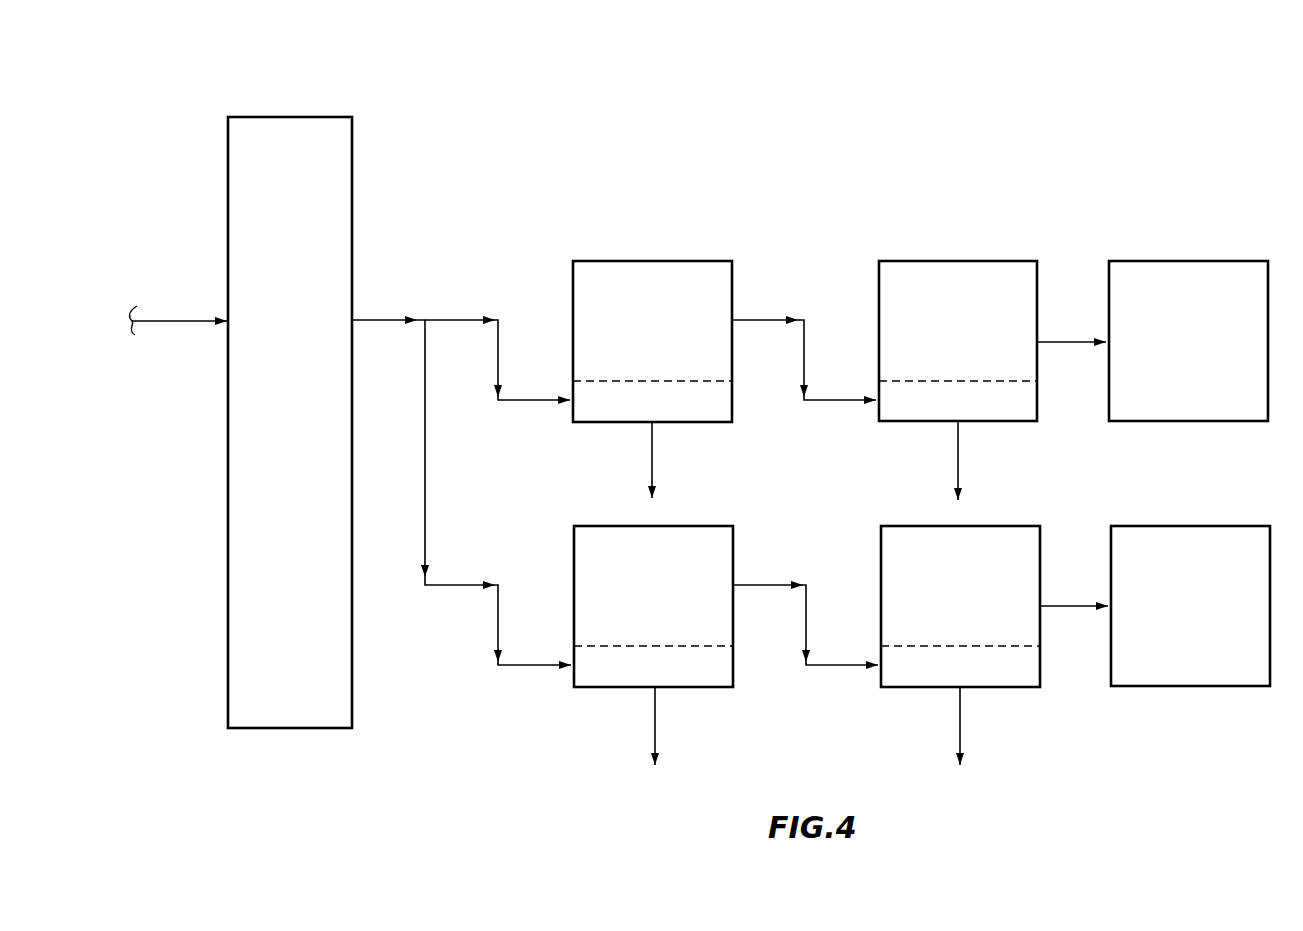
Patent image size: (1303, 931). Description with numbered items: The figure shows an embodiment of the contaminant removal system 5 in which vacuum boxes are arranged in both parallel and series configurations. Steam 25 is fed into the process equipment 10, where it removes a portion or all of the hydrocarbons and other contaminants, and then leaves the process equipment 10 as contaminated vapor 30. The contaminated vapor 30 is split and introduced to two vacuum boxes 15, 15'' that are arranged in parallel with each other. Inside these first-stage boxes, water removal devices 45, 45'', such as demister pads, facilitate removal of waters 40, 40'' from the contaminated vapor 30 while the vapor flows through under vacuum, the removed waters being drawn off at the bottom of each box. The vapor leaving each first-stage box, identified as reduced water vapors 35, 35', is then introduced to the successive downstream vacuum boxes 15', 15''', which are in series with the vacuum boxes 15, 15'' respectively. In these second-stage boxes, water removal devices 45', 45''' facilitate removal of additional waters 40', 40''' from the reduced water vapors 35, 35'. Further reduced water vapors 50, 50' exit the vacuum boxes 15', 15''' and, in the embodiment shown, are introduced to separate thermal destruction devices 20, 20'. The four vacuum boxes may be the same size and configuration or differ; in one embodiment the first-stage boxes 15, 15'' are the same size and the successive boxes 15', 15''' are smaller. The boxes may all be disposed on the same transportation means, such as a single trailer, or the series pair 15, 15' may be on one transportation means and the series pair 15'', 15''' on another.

The contaminant removal system 5 is at (1000, 100).
The process equipment 10 is at (352, 160).
The vacuum box 15 is at (652, 312).
The vacuum box 15' is at (958, 312).
The vacuum box 15'' is at (675, 580).
The vacuum box 15''' is at (988, 581).
The thermal destruction device 20 is at (1191, 312).
The thermal destruction device 20' is at (1198, 576).
The steam 25 is at (172, 322).
The contaminated vapor 30 is at (352, 298).
The reduced water vapor 35 is at (804, 337).
The reduced water vapor 35' is at (805, 598).
The water 40 is at (598, 460).
The water 40' is at (922, 460).
The water 40'' is at (707, 726).
The water 40''' is at (1020, 726).
The water removal device 45 is at (652, 343).
The water removal device 45' is at (958, 351).
The water removal device 45'' is at (653, 613).
The water removal device 45''' is at (960, 613).
The further reduced water vapor 50 is at (1071, 302).
The further reduced water vapor 50' is at (1076, 571).